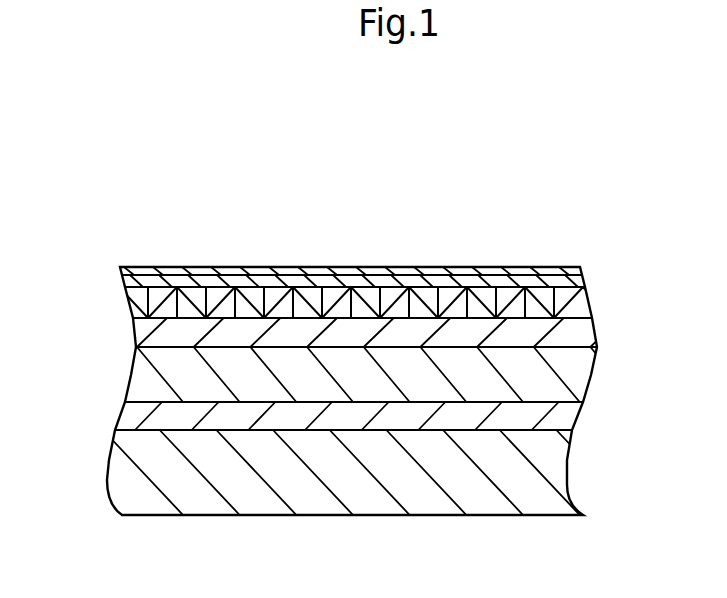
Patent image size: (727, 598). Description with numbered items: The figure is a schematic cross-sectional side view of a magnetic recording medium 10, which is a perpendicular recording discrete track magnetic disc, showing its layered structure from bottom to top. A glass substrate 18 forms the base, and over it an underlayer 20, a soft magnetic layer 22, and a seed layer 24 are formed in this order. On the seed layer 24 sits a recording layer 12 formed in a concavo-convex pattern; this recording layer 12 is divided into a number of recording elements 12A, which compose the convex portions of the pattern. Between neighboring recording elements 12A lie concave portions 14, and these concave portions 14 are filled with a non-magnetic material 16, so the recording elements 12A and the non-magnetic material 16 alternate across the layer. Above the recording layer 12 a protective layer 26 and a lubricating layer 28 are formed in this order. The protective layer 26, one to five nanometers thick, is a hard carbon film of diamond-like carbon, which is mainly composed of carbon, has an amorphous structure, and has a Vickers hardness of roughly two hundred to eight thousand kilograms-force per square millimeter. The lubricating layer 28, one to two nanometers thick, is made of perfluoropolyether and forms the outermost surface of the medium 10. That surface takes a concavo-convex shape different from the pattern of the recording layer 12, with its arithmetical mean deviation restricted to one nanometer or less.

The magnetic recording medium 10 is at (362, 139).
The recording layer 12 is at (365, 302).
The recording elements 12A is at (422, 297).
The concave portions 14 is at (386, 300).
The non-magnetic material 16 is at (397, 303).
The glass substrate 18 is at (369, 472).
The underlayer 20 is at (362, 416).
The soft magnetic layer 22 is at (378, 374).
The seed layer 24 is at (375, 332).
The protective layer 26 is at (355, 281).
The lubricating layer 28 is at (352, 271).